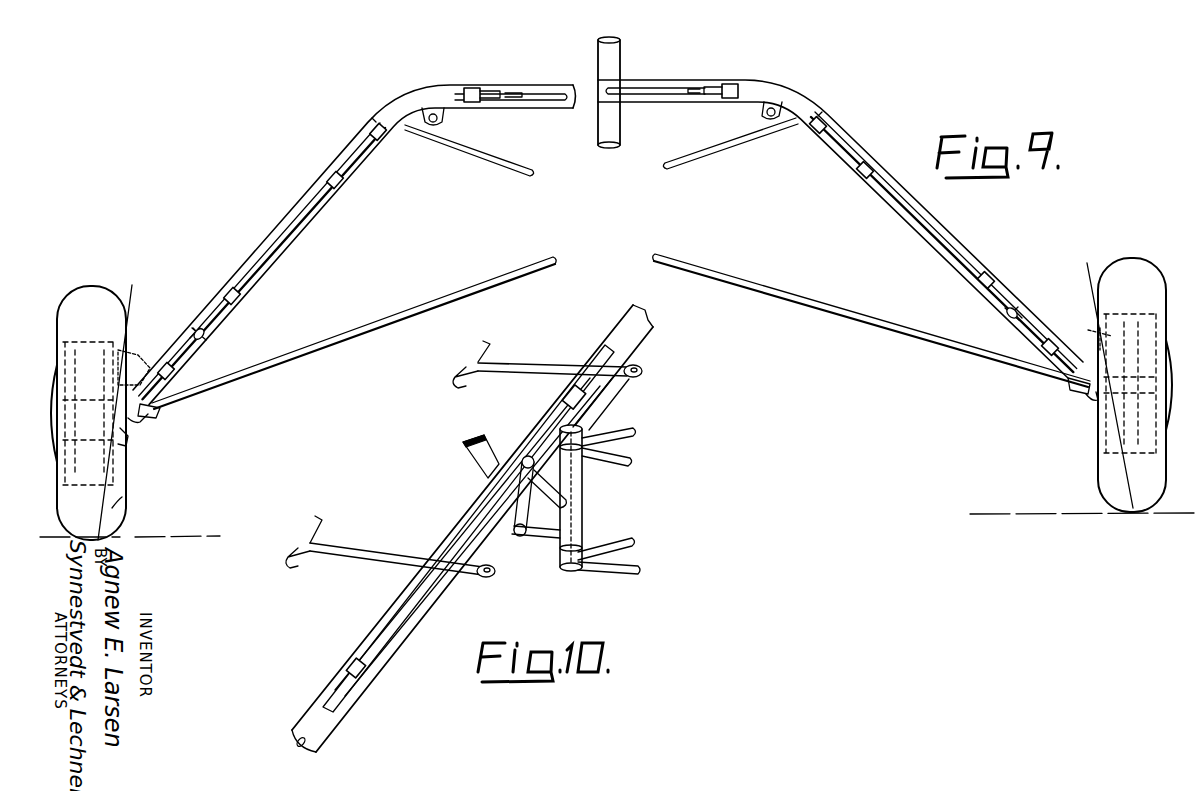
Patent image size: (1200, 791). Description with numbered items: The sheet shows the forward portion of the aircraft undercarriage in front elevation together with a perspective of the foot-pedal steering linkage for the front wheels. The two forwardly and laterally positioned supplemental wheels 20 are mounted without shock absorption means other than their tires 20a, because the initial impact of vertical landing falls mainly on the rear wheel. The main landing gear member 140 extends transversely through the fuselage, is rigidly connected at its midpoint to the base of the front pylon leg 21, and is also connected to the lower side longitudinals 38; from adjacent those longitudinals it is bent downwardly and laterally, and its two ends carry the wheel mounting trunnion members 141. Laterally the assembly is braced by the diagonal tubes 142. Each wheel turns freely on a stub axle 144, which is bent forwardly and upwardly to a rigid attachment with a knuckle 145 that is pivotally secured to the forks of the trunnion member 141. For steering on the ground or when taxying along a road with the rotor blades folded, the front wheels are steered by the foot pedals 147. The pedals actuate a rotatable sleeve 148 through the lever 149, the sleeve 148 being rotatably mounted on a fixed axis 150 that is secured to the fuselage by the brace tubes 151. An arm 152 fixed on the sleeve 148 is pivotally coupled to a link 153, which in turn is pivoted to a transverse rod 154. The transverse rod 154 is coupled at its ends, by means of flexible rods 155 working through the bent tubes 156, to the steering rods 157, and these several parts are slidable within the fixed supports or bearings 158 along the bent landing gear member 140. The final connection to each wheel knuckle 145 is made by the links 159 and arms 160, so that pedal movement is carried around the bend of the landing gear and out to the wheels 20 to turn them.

In FIG. 9, the supplemental wheel 20 is at (112, 470).
In FIG. 9, the tire 20a is at (112, 510).
In FIG. 9, the front pylon leg 21 is at (620, 68).
In FIG. 10, the front pylon leg 21 is at (484, 446).
In FIG. 9, the lower side longitudinal 38 is at (446, 120).
In FIG. 9, the main landing gear member 140 is at (285, 226).
In FIG. 10, the main landing gear member 140 is at (482, 498).
In FIG. 9, the wheel mounting trunnion member 141 is at (132, 426).
In FIG. 9, the diagonal tube 142 is at (472, 290).
In FIG. 9, the stub axle 144 is at (122, 348).
In FIG. 9, the knuckle 145 is at (126, 446).
In FIG. 10, the foot pedal 147 is at (453, 386).
In FIG. 10, the rotatable sleeve 148 is at (584, 490).
In FIG. 10, the lever 149 is at (614, 398).
In FIG. 10, the fixed axis 150 is at (578, 517).
In FIG. 10, the brace tube 151 is at (640, 452).
In FIG. 10, the arm 152 is at (548, 532).
In FIG. 10, the link 153 is at (518, 492).
In FIG. 9, the transverse rod 154 is at (526, 92).
In FIG. 10, the transverse rod 154 is at (556, 420).
In FIG. 9, the flexible rod 155 is at (498, 90).
In FIG. 9, the bent tube 156 is at (400, 112).
In FIG. 9, the steering rod 157 is at (250, 270).
In FIG. 9, the fixed support or bearing 158 is at (386, 138).
In FIG. 9, the link 159 is at (182, 346).
In FIG. 9, the arm 160 is at (158, 410).